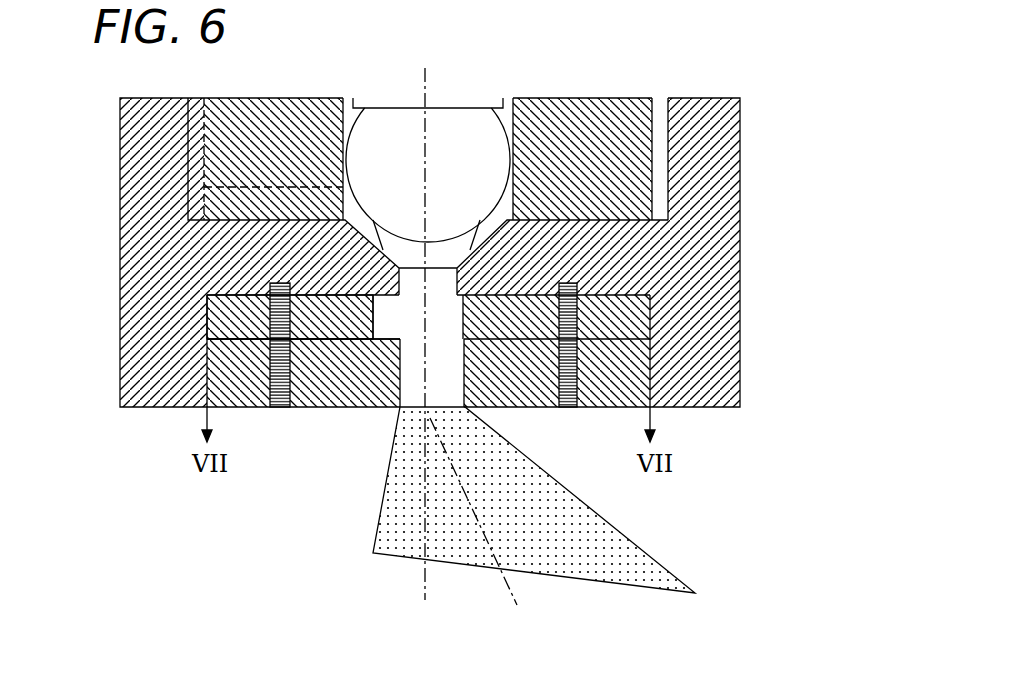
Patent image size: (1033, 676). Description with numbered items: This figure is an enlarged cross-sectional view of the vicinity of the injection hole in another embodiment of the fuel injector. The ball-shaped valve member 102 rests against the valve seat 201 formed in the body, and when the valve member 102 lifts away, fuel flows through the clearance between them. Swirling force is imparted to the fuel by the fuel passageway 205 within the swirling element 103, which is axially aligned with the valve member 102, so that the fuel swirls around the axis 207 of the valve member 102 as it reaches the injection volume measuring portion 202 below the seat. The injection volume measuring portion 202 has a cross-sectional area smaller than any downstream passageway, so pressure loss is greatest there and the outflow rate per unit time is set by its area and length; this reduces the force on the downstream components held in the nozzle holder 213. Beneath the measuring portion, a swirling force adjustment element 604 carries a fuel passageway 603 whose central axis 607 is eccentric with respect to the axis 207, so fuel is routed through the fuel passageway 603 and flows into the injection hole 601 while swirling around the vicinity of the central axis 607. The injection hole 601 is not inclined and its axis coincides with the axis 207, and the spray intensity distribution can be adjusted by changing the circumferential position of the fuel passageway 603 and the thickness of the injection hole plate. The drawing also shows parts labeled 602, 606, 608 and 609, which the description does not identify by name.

The valve member 102 is at (485, 155).
The swirling element 103 is at (583, 193).
The valve seat 201 is at (520, 225).
The injection volume measuring portion 202 is at (400, 315).
The fuel passageway 205 is at (257, 198).
The axis of the valve member 207 is at (425, 87).
The nozzle holder 213 is at (673, 357).
The injection hole 601 is at (440, 383).
The lower plate 602 is at (620, 385).
The fuel passageway 603 is at (263, 316).
The swirling force adjustment element 604 is at (257, 333).
The fuel spray 606 is at (563, 548).
The central axis of the fuel passageway 607 is at (415, 273).
The orifice plate 608 is at (600, 312).
The fixing screw 609 is at (283, 408).